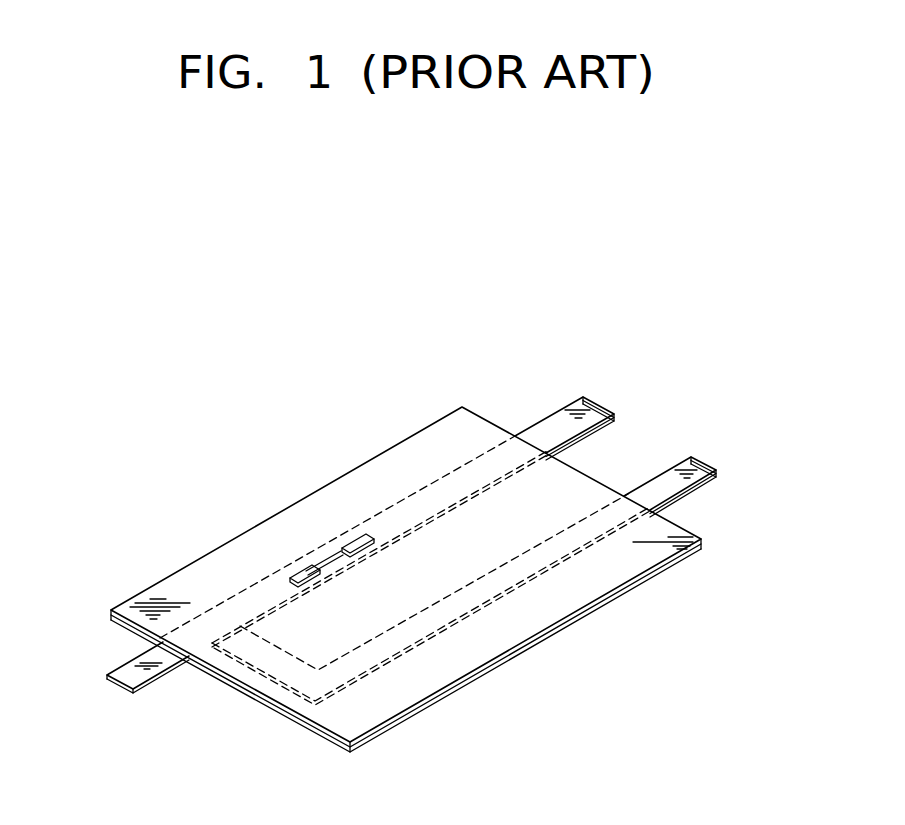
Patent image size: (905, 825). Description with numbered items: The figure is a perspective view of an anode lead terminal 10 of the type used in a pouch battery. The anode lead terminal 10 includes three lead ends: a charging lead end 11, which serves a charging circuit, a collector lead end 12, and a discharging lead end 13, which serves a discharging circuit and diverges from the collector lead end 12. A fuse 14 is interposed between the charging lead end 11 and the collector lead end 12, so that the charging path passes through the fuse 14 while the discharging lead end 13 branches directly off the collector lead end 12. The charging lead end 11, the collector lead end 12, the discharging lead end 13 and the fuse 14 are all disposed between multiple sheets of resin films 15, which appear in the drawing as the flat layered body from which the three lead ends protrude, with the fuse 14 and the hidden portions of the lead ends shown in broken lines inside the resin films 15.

The anode lead terminal 10 is at (513, 345).
The charging lead end 11 is at (601, 410).
The collector lead end 12 is at (122, 670).
The discharging lead end 13 is at (711, 466).
The fuse 14 is at (325, 560).
The resin films 15 is at (225, 565).